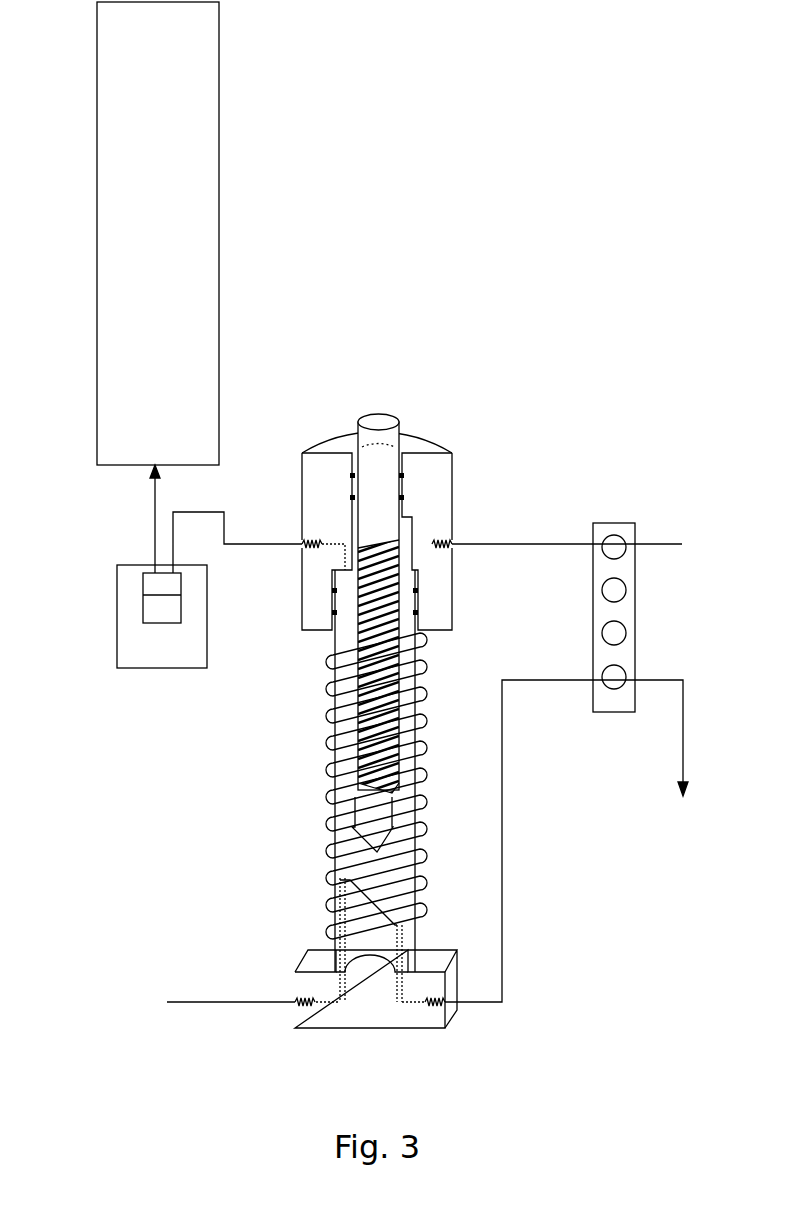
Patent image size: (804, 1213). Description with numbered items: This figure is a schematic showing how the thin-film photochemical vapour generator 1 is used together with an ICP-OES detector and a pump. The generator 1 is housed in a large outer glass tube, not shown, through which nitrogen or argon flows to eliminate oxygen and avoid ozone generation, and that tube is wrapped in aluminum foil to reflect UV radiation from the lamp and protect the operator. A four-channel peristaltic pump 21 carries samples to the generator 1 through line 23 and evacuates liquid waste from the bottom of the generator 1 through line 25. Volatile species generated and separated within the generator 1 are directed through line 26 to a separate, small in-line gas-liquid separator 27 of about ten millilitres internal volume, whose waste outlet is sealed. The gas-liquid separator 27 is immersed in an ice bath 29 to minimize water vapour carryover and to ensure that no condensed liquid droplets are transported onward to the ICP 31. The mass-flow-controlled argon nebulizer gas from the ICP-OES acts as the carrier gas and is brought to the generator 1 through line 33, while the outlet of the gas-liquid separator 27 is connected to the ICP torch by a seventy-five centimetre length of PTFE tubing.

The generator 1 is at (437, 412).
The peristaltic pump 21 is at (622, 612).
The line 23 is at (481, 542).
The line 25 is at (502, 830).
The line 26 is at (281, 544).
The gas-liquid separator 27 is at (158, 605).
The ice bath 29 is at (133, 645).
The ICP 31 is at (207, 145).
The line 33 is at (237, 1000).